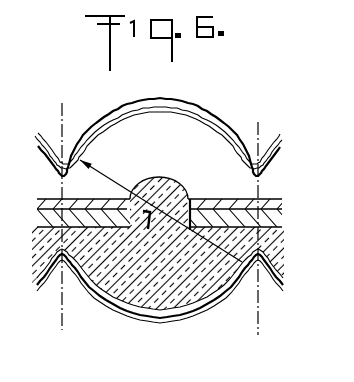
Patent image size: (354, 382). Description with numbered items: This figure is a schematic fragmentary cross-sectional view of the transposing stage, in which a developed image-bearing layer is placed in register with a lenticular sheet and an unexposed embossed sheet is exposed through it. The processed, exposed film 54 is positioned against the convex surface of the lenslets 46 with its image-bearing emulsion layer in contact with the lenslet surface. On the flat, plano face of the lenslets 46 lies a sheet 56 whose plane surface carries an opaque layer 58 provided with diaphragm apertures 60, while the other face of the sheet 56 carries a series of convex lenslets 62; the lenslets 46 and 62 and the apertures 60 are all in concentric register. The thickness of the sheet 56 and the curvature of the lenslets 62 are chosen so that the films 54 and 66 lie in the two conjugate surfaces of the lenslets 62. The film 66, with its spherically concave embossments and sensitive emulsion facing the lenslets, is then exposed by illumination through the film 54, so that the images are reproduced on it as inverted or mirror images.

The lenslets 46 is at (150, 288).
The exposed film 54 is at (195, 306).
The sheet 56 is at (205, 198).
The opaque layer 58 is at (181, 195).
The diaphragm apertures 60 is at (148, 229).
The convex lenslets 62 is at (156, 178).
The film 66 is at (220, 116).